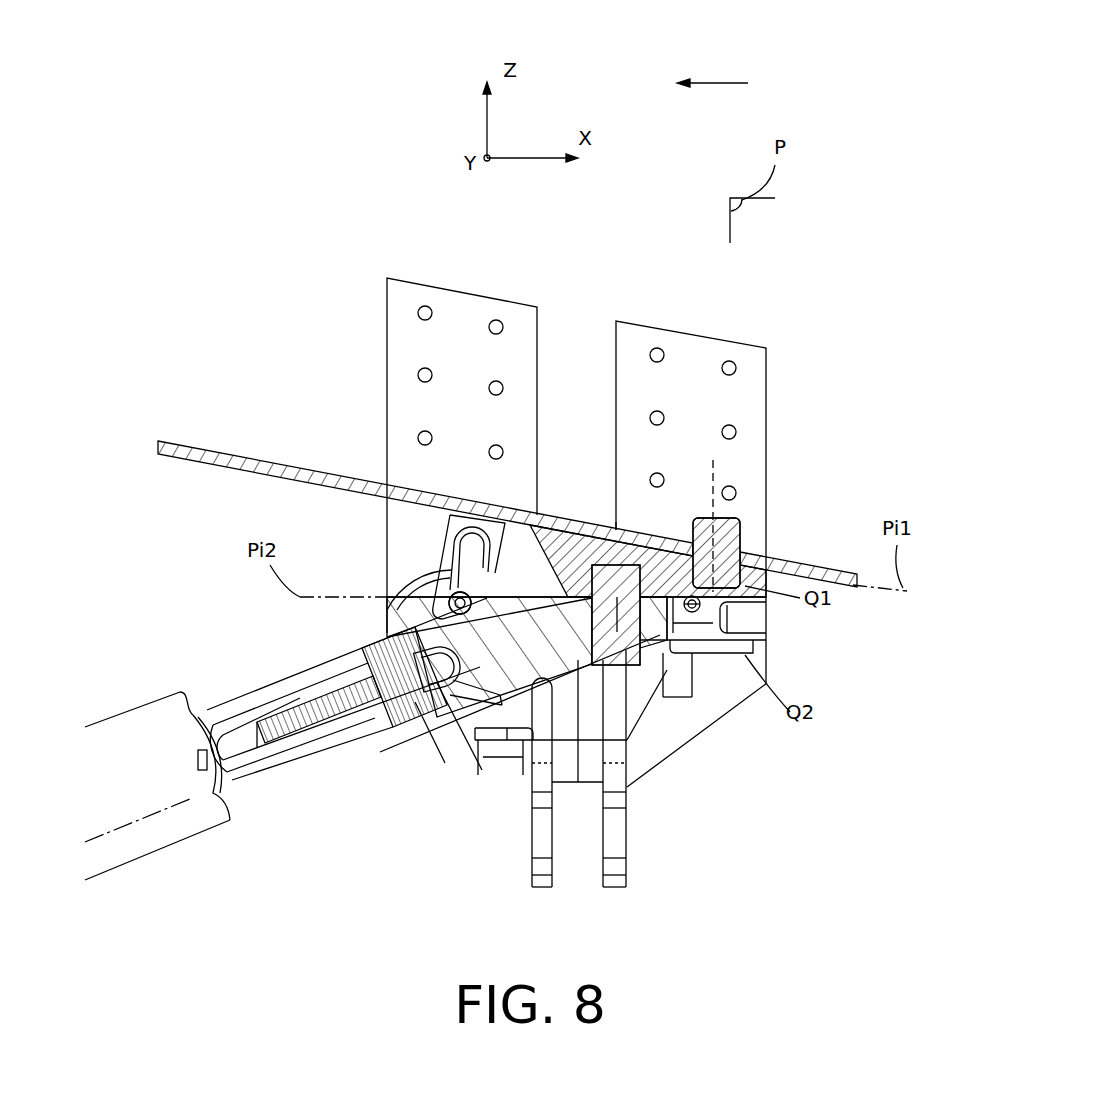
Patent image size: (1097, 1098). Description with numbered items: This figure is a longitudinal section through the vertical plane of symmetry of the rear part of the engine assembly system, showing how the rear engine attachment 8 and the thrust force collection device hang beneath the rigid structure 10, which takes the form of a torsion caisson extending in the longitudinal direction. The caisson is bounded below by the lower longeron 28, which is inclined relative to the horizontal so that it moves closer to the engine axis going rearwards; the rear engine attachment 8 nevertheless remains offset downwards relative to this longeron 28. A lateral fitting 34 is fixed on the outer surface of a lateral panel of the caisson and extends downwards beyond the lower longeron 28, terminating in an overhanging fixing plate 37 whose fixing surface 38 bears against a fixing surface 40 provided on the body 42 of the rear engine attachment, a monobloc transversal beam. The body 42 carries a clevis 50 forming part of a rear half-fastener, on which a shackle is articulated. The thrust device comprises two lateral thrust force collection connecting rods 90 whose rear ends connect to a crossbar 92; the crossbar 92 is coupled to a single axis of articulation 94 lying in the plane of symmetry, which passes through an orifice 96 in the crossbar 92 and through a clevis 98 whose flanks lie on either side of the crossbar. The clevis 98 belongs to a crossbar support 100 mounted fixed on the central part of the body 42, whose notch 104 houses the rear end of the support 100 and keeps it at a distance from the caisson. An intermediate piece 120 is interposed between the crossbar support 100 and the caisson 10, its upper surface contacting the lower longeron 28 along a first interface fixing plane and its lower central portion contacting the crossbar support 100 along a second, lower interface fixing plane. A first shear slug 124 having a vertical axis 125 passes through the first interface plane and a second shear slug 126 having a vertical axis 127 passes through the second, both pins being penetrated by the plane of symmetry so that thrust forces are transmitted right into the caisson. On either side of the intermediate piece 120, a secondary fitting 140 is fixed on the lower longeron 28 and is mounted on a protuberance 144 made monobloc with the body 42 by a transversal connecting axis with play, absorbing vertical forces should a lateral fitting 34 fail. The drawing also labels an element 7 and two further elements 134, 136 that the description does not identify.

The viewing direction of FIG. 7 is at (732, 82).
The rear engine attachment 8 is at (733, 778).
The structure 10 is at (501, 466).
The lower longeron 28 is at (222, 464).
The lateral fitting 34 is at (430, 276).
The fixing plate 37 is at (747, 610).
The fixing surface 38 is at (767, 680).
The fixing surface 40 is at (763, 643).
The body of the rear engine attachment 42 is at (716, 713).
The clevis 50 is at (618, 867).
The lateral thrust force collection connecting rods 90 is at (187, 853).
The crossbar 92 is at (243, 757).
The axis of articulation 94 is at (405, 727).
The orifice 96 is at (450, 690).
The clevis 98 is at (357, 730).
The crossbar support 100 is at (494, 668).
The notch 104 is at (520, 750).
The intermediate piece 120 is at (562, 520).
The first shear slug 124 is at (742, 528).
The vertical axis 125 is at (713, 473).
The second shear slug 126 is at (596, 636).
The vertical axis 127 is at (616, 522).
The screw 134 is at (605, 505).
The screw 136 is at (750, 623).
The secondary fitting 140 is at (527, 565).
The protuberance 144 is at (465, 568).